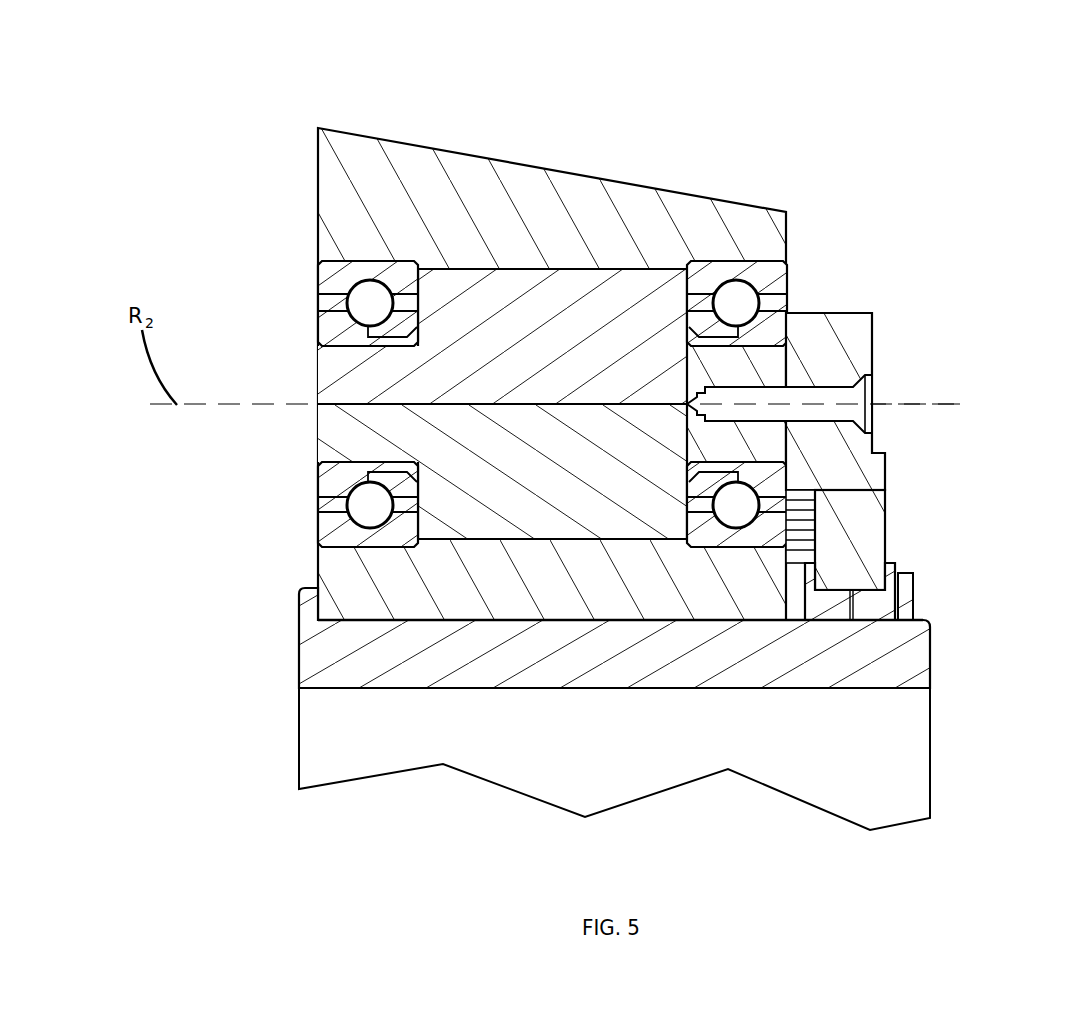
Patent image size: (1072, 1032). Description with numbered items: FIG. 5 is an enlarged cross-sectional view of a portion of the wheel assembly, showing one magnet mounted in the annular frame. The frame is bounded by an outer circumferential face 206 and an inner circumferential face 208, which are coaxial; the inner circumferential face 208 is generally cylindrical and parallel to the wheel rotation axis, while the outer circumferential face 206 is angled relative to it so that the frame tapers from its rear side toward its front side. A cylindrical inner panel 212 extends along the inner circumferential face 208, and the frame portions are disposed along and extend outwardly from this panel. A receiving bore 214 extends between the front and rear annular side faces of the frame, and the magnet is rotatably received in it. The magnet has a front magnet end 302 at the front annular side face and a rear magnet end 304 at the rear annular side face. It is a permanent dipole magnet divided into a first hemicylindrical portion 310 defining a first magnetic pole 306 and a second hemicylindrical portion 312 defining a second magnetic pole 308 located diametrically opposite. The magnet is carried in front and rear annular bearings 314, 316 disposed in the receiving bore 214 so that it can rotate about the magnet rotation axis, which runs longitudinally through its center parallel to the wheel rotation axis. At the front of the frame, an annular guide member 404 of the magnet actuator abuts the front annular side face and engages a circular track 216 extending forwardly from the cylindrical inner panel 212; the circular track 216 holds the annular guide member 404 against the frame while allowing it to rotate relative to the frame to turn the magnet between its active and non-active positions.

The outer circumferential face 206 is at (537, 167).
The inner circumferential face 208 is at (557, 621).
The cylindrical inner panel 212 is at (445, 669).
The receiving bore 214 is at (640, 272).
The circular track 216 is at (902, 560).
The front magnet end 302 is at (788, 370).
The rear magnet end 304 is at (318, 358).
The first magnetic pole 306 is at (488, 296).
The second magnetic pole 308 is at (318, 450).
The first hemicylindrical portion 310 is at (318, 375).
The second hemicylindrical portion 312 is at (318, 430).
The front annular bearing 314 is at (770, 268).
The rear annular bearing 316 is at (333, 277).
The annular guide member 404 is at (920, 438).